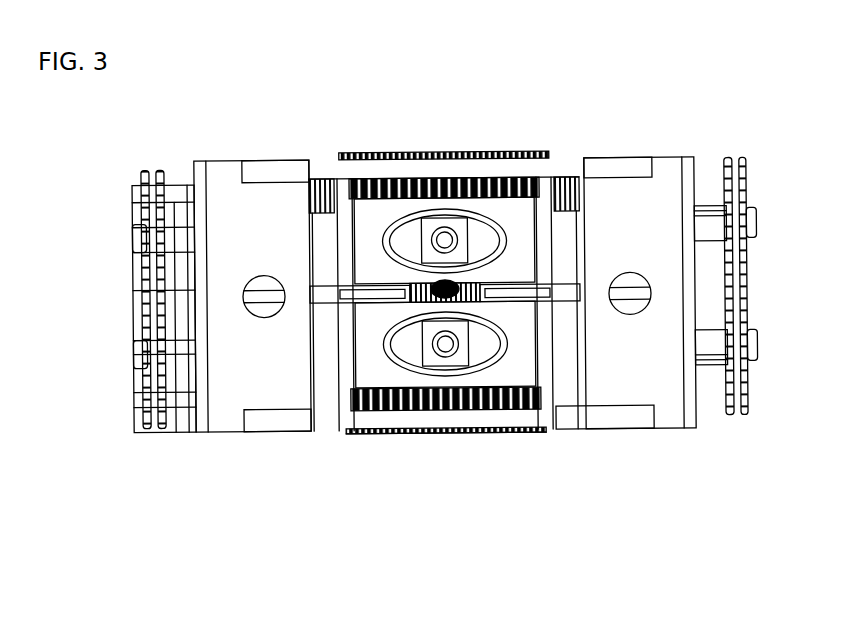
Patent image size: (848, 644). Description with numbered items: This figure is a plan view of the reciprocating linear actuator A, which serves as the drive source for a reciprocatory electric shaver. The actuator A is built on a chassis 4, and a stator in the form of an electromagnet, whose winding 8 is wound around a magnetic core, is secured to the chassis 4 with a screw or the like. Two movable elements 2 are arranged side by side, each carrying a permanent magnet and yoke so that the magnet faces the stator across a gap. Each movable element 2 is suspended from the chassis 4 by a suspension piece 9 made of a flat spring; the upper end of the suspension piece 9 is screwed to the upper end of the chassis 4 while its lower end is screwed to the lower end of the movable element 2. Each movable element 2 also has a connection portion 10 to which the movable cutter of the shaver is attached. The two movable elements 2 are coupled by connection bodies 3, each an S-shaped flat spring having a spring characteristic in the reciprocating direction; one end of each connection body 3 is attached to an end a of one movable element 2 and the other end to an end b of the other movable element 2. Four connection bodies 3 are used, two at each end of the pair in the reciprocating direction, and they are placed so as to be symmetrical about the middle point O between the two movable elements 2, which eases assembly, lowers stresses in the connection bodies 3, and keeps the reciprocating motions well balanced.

The movable element 2 is at (375, 223).
The connection body 3 is at (162, 233).
The chassis 4 is at (259, 170).
The winding 8 is at (408, 178).
The suspension piece 9 is at (220, 200).
The connection portion 10 is at (442, 283).
The middle point O is at (330, 375).
The reciprocating linear actuator A is at (447, 432).
The end of one movable element a is at (757, 222).
The end of the other movable element b is at (757, 352).